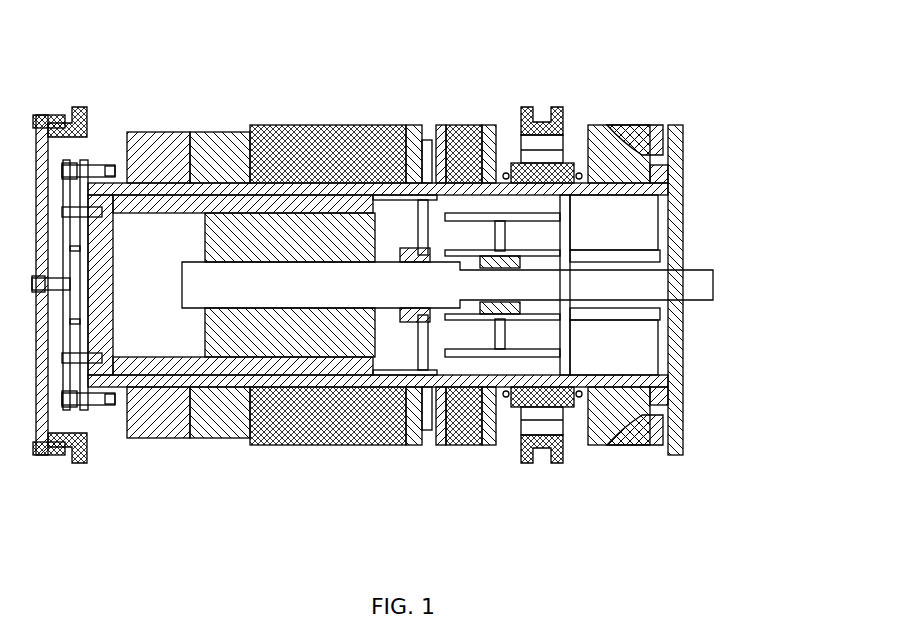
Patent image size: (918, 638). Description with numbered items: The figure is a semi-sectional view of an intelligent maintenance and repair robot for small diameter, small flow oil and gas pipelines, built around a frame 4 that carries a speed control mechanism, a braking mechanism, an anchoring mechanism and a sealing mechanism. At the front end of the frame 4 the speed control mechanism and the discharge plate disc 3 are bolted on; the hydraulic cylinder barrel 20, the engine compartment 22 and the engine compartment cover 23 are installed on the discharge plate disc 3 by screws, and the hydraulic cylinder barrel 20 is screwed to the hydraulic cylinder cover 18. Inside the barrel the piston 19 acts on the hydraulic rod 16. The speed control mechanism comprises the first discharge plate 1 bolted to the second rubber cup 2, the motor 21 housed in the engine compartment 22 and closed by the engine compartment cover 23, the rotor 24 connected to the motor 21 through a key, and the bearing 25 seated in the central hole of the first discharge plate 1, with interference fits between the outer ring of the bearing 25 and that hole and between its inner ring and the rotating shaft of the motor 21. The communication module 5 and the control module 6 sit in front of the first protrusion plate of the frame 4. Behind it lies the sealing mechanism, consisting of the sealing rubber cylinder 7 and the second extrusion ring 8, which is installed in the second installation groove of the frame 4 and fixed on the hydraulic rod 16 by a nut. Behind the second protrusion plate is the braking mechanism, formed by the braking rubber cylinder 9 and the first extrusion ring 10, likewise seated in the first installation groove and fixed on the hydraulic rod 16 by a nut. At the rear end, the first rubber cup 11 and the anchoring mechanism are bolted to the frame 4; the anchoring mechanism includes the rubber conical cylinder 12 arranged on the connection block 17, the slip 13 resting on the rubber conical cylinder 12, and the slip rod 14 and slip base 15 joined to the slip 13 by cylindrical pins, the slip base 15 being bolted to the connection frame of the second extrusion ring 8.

The first discharge plate 1 is at (40, 118).
The second rubber cup 2 is at (78, 108).
The discharge plate disc 3 is at (88, 170).
The frame 4 is at (102, 168).
The communication module 5 is at (157, 136).
The control module 6 is at (210, 136).
The sealing rubber cylinder 7 is at (333, 125).
The second extrusion ring 8 is at (409, 127).
The braking rubber cylinder 9 is at (456, 127).
The first extrusion ring 10 is at (491, 165).
The first rubber cup 11 is at (524, 108).
The rubber conical cylinder 12 is at (603, 133).
The slip 13 is at (630, 128).
The slip rod 14 is at (669, 127).
The slip base 15 is at (680, 197).
The hydraulic rod 16 is at (690, 290).
The connection block 17 is at (592, 447).
The hydraulic cylinder cover 18 is at (420, 420).
The piston 19 is at (345, 447).
The hydraulic cylinder barrel 20 is at (250, 432).
The motor 21 is at (140, 392).
The engine compartment 22 is at (100, 403).
The engine compartment cover 23 is at (80, 405).
The rotor 24 is at (53, 448).
The bearing 25 is at (38, 443).